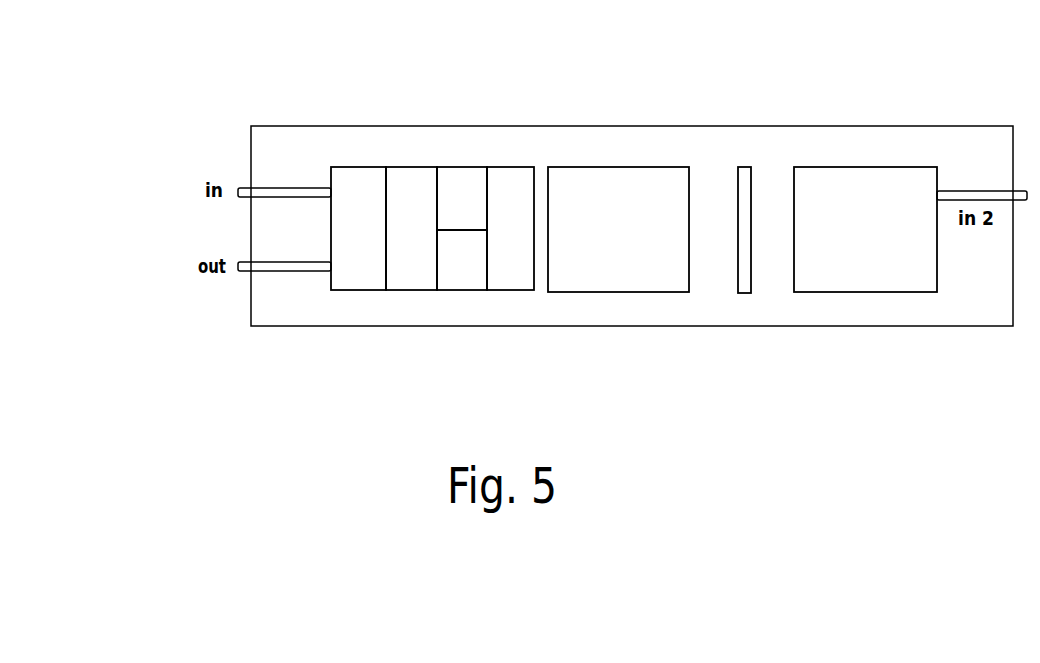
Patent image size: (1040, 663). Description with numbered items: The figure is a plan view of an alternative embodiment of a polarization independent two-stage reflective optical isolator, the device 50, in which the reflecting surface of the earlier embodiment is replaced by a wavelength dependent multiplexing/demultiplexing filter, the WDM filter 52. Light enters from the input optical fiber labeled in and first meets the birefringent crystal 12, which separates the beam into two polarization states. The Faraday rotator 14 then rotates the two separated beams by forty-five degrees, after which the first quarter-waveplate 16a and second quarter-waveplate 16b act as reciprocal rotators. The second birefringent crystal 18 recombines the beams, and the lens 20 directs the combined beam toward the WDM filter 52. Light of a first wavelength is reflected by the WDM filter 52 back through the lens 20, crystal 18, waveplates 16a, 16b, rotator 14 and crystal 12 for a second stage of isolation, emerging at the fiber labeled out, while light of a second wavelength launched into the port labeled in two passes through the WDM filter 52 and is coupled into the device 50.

The birefringent crystal 12 is at (344, 167).
The Faraday rotator 14 is at (402, 167).
The first quarter-waveplate 16a is at (475, 290).
The second quarter-waveplate 16b is at (460, 167).
The second birefringent crystal 18 is at (517, 290).
The lens 20 is at (607, 292).
The device 50 is at (510, 126).
The WDM filter 52 is at (748, 293).